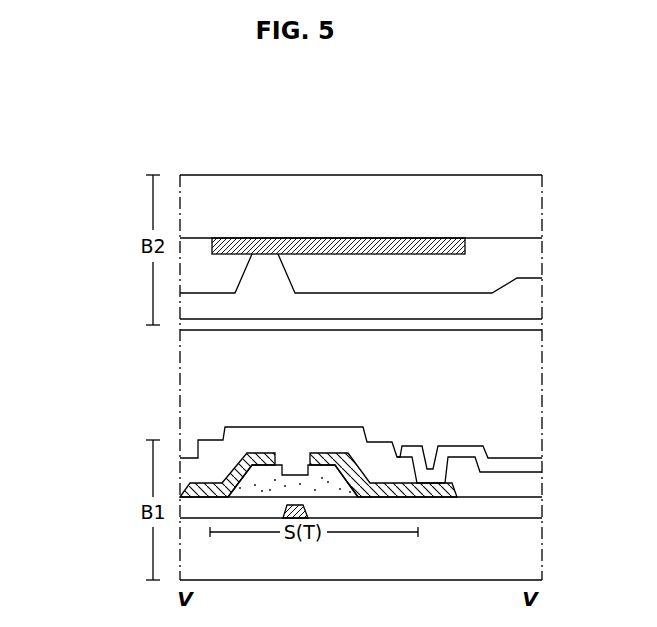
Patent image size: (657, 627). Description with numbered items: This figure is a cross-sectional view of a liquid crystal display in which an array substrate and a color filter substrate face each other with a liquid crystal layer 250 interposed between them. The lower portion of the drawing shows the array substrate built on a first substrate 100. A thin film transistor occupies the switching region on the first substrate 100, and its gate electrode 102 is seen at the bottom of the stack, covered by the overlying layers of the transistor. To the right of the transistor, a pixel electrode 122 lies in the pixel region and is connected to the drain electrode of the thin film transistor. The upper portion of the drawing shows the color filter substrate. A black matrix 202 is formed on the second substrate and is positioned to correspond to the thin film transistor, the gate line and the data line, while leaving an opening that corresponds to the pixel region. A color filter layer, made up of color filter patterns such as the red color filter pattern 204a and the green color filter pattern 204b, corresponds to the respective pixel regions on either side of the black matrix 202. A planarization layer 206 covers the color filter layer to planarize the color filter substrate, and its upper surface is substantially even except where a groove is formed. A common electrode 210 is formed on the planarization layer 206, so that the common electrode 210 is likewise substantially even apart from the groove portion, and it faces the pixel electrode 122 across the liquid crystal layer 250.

The first substrate 100 is at (521, 565).
The gate electrode 102 is at (294, 503).
The pixel electrode 122 is at (460, 452).
The black matrix 202 is at (330, 240).
The red color filter pattern 204a is at (200, 262).
The green color filter pattern 204b is at (485, 247).
The planarization layer 206 is at (402, 300).
The common electrode 210 is at (385, 323).
The liquid crystal layer 250 is at (200, 380).